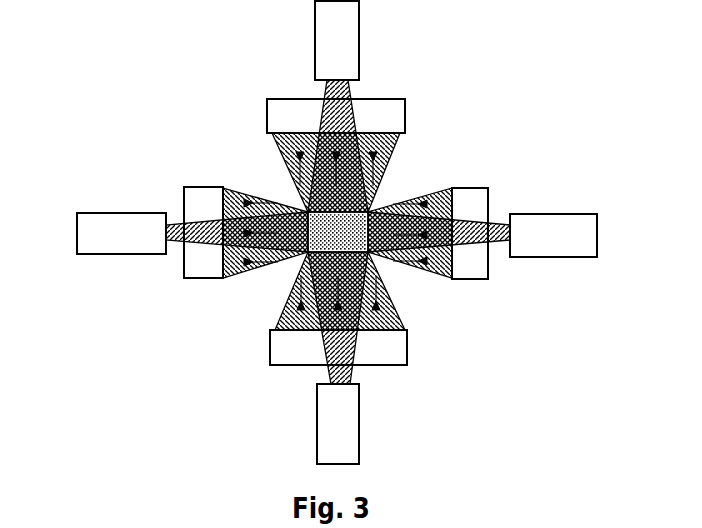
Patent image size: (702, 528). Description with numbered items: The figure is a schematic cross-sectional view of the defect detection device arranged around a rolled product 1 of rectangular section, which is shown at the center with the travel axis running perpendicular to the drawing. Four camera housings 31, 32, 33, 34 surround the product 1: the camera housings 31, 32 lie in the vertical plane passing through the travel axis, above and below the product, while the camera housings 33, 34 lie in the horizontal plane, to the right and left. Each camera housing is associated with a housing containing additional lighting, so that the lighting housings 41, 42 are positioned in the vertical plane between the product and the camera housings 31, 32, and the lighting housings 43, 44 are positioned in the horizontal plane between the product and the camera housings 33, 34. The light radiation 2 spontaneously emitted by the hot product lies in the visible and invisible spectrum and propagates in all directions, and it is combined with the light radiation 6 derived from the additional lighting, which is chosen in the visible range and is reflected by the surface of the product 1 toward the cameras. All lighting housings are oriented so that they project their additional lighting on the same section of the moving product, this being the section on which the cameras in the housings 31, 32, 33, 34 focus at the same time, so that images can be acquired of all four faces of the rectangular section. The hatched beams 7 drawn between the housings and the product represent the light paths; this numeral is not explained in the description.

The product 1 is at (370, 254).
The light radiation 2 is at (411, 198).
The light radiation 6 is at (277, 150).
The light beam stem 7 is at (323, 110).
The camera housing 31 is at (350, 67).
The camera housing 32 is at (332, 417).
The camera housing 33 is at (553, 230).
The camera housing 34 is at (140, 252).
The lighting housing 41 is at (392, 123).
The lighting housing 42 is at (305, 353).
The lighting housing 43 is at (468, 266).
The lighting housing 44 is at (202, 205).